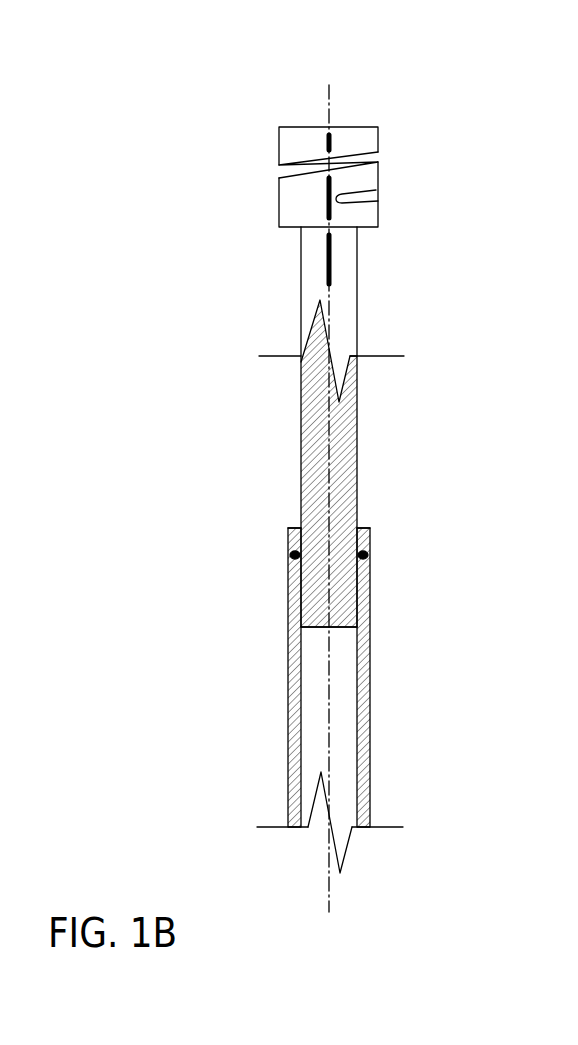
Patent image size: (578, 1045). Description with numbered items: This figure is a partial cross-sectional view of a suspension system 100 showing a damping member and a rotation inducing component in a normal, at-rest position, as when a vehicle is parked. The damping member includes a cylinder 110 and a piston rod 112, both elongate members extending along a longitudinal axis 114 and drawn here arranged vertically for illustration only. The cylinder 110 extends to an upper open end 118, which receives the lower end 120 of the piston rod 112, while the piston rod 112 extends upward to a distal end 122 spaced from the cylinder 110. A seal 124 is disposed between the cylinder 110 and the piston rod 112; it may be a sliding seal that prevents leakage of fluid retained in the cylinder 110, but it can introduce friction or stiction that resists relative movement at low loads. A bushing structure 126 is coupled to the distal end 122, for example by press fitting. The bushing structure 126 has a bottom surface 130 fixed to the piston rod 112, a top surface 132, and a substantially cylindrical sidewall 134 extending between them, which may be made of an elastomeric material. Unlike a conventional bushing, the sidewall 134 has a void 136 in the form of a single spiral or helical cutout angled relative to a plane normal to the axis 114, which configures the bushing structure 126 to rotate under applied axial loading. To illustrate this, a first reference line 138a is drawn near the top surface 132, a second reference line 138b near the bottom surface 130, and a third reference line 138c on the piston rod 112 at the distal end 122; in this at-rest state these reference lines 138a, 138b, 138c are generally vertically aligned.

The suspension system 100 is at (128, 63).
The cylinder 110 is at (367, 715).
The piston rod 112 is at (345, 303).
The longitudinal axis 114 is at (330, 890).
The upper open end 118 is at (368, 532).
The lower end 120 is at (353, 603).
The distal end 122 is at (353, 233).
The seal 124 is at (368, 560).
The bushing structure 126 is at (415, 127).
The bottom surface 130 is at (297, 227).
The top surface 132 is at (295, 128).
The sidewall 134 is at (290, 200).
The void 136 is at (380, 193).
The first reference line 138a is at (326, 141).
The second reference line 138b is at (327, 212).
The third reference line 138c is at (325, 257).